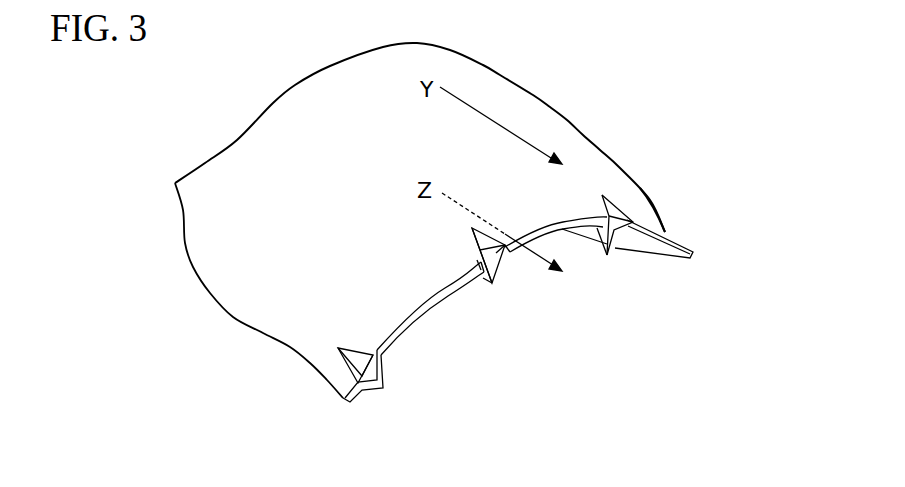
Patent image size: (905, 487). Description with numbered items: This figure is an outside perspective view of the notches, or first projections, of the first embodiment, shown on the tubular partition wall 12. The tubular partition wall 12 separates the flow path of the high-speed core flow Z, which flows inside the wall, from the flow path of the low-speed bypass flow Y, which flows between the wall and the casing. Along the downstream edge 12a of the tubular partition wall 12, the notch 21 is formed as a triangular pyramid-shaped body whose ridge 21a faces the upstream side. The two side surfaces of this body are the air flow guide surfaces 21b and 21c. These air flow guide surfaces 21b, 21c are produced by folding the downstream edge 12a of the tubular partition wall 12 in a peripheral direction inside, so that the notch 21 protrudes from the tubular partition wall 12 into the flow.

The tubular partition wall 12 is at (540, 123).
The downstream edge 12a is at (658, 232).
The notch 21 is at (450, 247).
The ridge 21a is at (477, 277).
The air flow guide surface 21b is at (496, 253).
The air flow guide surface 21c is at (483, 278).